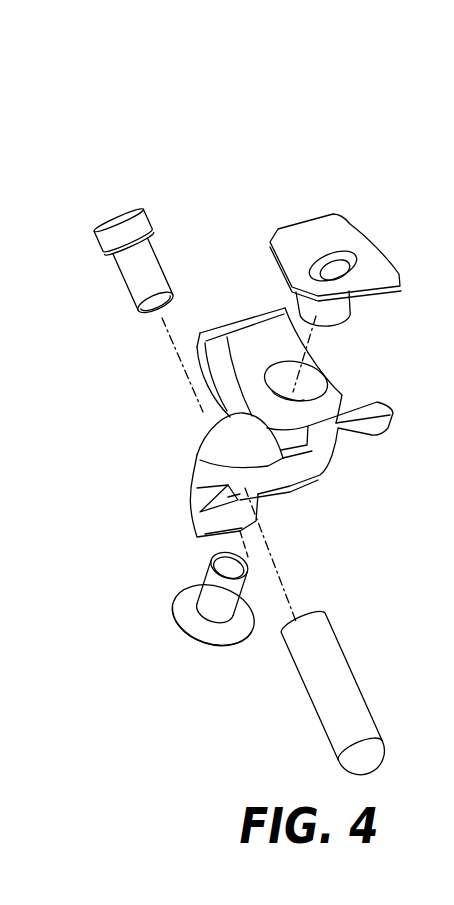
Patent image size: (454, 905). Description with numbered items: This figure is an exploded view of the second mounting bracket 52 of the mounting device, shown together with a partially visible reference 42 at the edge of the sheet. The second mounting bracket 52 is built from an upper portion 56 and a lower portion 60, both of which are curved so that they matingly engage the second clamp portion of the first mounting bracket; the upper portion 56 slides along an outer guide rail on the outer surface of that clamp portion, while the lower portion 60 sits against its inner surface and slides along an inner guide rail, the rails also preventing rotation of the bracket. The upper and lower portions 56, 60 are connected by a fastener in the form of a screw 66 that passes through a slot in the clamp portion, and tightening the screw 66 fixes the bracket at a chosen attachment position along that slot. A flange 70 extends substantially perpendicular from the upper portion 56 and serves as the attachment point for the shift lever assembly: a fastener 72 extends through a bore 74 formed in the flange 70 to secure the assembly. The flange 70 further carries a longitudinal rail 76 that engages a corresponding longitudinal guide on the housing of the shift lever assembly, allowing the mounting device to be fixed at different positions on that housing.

The clamp assembly 42 is at (452, 112).
The second mounting bracket 52 is at (273, 448).
The upper portion 56 is at (345, 396).
The lower portion 60 is at (283, 243).
The screw 66 is at (202, 622).
The flange 70 is at (195, 487).
The fastener 72 is at (125, 222).
The bore 74 is at (205, 537).
The longitudinal rail 76 is at (208, 517).